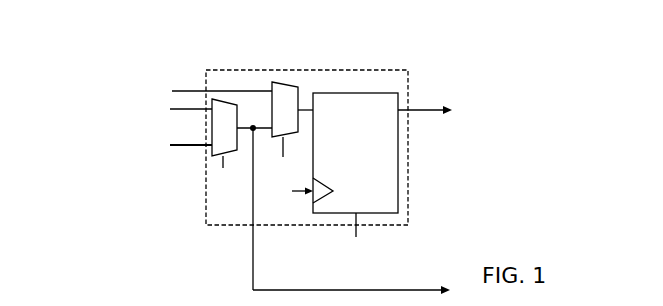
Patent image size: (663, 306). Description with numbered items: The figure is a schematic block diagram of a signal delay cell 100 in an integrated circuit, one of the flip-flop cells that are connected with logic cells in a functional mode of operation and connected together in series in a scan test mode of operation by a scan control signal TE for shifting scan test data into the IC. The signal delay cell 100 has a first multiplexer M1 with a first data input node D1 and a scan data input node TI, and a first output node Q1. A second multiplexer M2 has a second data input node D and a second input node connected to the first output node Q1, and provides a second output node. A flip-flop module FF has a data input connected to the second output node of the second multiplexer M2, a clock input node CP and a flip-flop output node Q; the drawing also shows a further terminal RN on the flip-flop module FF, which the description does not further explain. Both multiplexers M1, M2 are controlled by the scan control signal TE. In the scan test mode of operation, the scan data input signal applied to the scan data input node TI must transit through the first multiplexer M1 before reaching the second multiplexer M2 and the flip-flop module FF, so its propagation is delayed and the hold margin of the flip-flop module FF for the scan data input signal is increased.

The signal delay cell 100 is at (248, 158).
The first multiplexer M1 is at (224, 127).
The second multiplexer M2 is at (285, 109).
The flip-flop module FF is at (355, 153).
The second data input node D is at (222, 79).
The first data input node D1 is at (174, 109).
The scan data input node TI is at (177, 146).
The scan control signal TE is at (257, 166).
The clock input node CP is at (293, 207).
The reset input RN is at (355, 238).
The flip-flop output node Q is at (425, 96).
The first output node Q1 is at (351, 211).